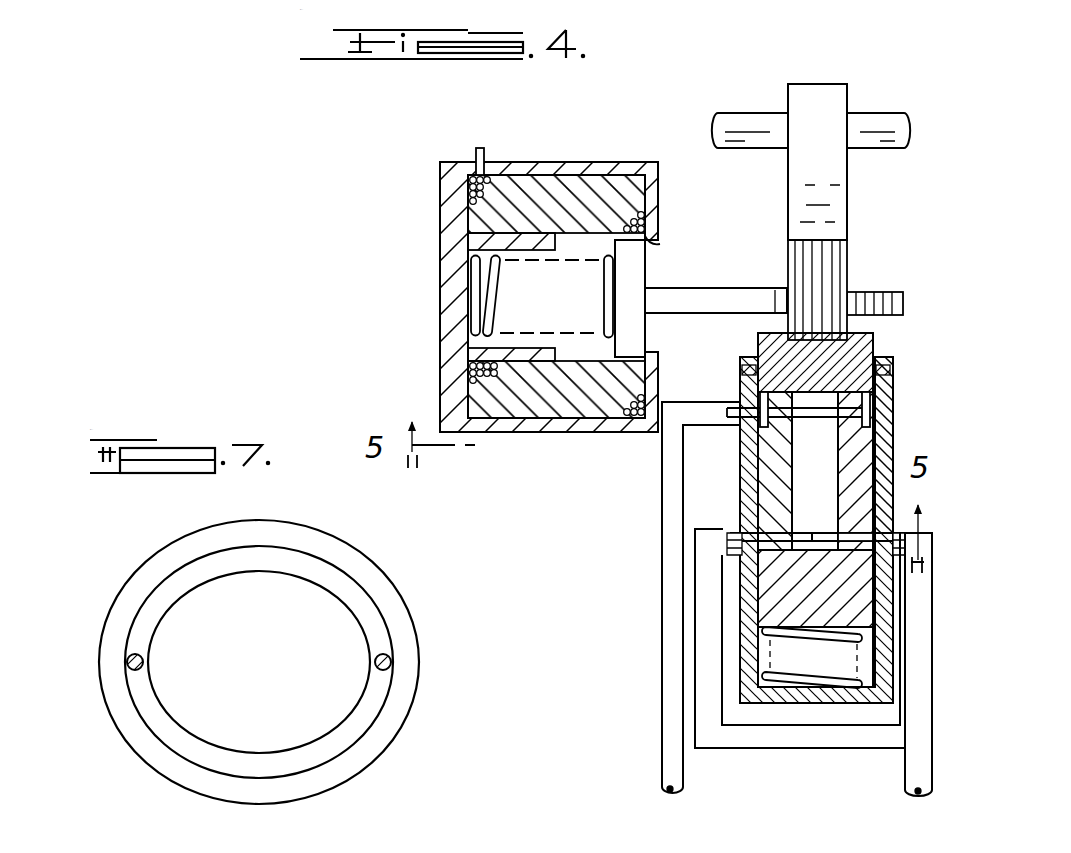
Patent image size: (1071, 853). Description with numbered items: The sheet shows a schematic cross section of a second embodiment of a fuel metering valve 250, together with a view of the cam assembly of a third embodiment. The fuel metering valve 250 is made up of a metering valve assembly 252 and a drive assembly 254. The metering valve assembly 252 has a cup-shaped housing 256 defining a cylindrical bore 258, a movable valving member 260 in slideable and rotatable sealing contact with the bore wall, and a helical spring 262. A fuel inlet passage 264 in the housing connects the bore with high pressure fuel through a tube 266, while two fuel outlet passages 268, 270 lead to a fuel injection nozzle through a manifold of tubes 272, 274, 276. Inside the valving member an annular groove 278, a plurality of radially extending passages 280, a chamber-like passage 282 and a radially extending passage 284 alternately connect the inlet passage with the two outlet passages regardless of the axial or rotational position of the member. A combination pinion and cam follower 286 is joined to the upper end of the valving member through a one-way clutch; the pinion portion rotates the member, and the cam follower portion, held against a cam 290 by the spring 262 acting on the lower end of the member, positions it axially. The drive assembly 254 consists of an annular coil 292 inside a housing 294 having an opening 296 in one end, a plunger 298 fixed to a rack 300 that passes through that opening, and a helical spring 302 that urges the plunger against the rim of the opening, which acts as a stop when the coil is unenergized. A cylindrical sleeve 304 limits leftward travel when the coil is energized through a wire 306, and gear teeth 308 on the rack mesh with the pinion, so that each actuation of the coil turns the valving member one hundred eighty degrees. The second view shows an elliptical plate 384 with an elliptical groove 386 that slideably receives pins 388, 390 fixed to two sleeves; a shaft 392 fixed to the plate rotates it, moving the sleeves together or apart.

In FIG. 4, the fuel metering valve 250 is at (648, 150).
In FIG. 4, the metering valve assembly 252 is at (822, 162).
In FIG. 4, the drive assembly 254 is at (606, 137).
In FIG. 4, the cup-shaped housing 256 is at (897, 415).
In FIG. 4, the cylindrical bore 258 is at (757, 455).
In FIG. 4, the movable valving member 260 is at (748, 580).
In FIG. 4, the helical spring 262 is at (770, 690).
In FIG. 4, the fuel inlet passage 264 is at (745, 410).
In FIG. 4, the tube 266 is at (662, 485).
In FIG. 4, the fuel outlet passage 268 is at (742, 536).
In FIG. 4, the fuel outlet passage 270 is at (815, 588).
In FIG. 4, the tube 272 is at (705, 613).
In FIG. 4, the tube 274 is at (887, 706).
In FIG. 4, the tube 276 is at (905, 775).
In FIG. 4, the annular groove 278 is at (895, 378).
In FIG. 4, the radially extending passages 280 is at (848, 408).
In FIG. 4, the chamber-like passage 282 is at (836, 472).
In FIG. 4, the radially extending passage 284 is at (850, 572).
In FIG. 4, the combination pinion and cam follower 286 is at (790, 250).
In FIG. 4, the cam 290 is at (850, 178).
In FIG. 4, the annular coil 292 is at (493, 383).
In FIG. 4, the housing 294 is at (438, 193).
In FIG. 4, the opening 296 is at (658, 243).
In FIG. 4, the plunger 298 is at (635, 272).
In FIG. 4, the rack 300 is at (676, 312).
In FIG. 4, the helical spring 302 is at (470, 335).
In FIG. 4, the cylindrical sleeve 304 is at (480, 240).
In FIG. 4, the wire 306 is at (474, 150).
In FIG. 4, the gear teeth 308 is at (862, 290).
In FIG. 7, the elliptical plate 384 is at (410, 713).
In FIG. 7, the elliptical groove 386 is at (308, 562).
In FIG. 7, the pin 388 is at (143, 660).
In FIG. 7, the pin 390 is at (392, 660).
In FIG. 4, the shaft 392 is at (630, 832).